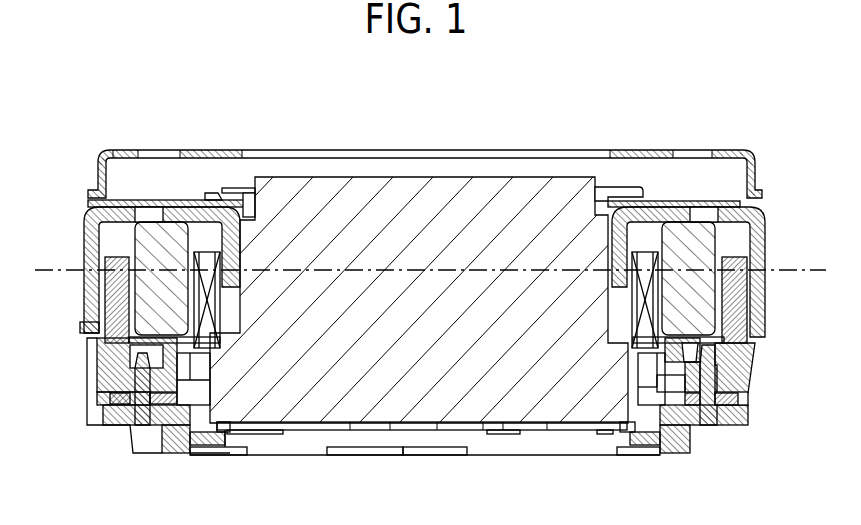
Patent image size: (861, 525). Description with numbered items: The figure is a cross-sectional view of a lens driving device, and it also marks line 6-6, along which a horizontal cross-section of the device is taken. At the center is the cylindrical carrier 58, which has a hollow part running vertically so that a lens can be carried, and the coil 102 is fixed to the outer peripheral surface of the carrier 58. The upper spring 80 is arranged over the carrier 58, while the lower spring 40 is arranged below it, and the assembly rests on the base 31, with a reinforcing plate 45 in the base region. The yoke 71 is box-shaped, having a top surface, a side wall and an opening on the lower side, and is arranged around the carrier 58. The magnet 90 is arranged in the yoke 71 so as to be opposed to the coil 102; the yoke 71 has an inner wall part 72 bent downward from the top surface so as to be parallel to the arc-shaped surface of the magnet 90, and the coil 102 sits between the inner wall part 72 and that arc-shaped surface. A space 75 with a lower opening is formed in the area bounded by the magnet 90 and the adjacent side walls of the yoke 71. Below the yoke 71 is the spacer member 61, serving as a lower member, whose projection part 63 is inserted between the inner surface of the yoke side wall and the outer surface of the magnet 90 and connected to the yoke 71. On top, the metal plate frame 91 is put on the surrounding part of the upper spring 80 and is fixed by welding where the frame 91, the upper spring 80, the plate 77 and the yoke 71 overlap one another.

The line 6- 6 is at (37, 267).
The base 31 is at (675, 432).
The lower spring 40 is at (748, 407).
The reinforcing plate 45 is at (687, 405).
The carrier 58 is at (280, 393).
The spacer member 61 is at (737, 372).
The projection part 63 is at (733, 310).
The yoke 71 is at (762, 283).
The inner wall part 72 is at (627, 208).
The space 75 is at (740, 235).
The plate 77 is at (732, 205).
The upper spring 80 is at (697, 198).
The magnet 90 is at (150, 293).
The frame 91 is at (210, 148).
The coil 102 is at (203, 303).